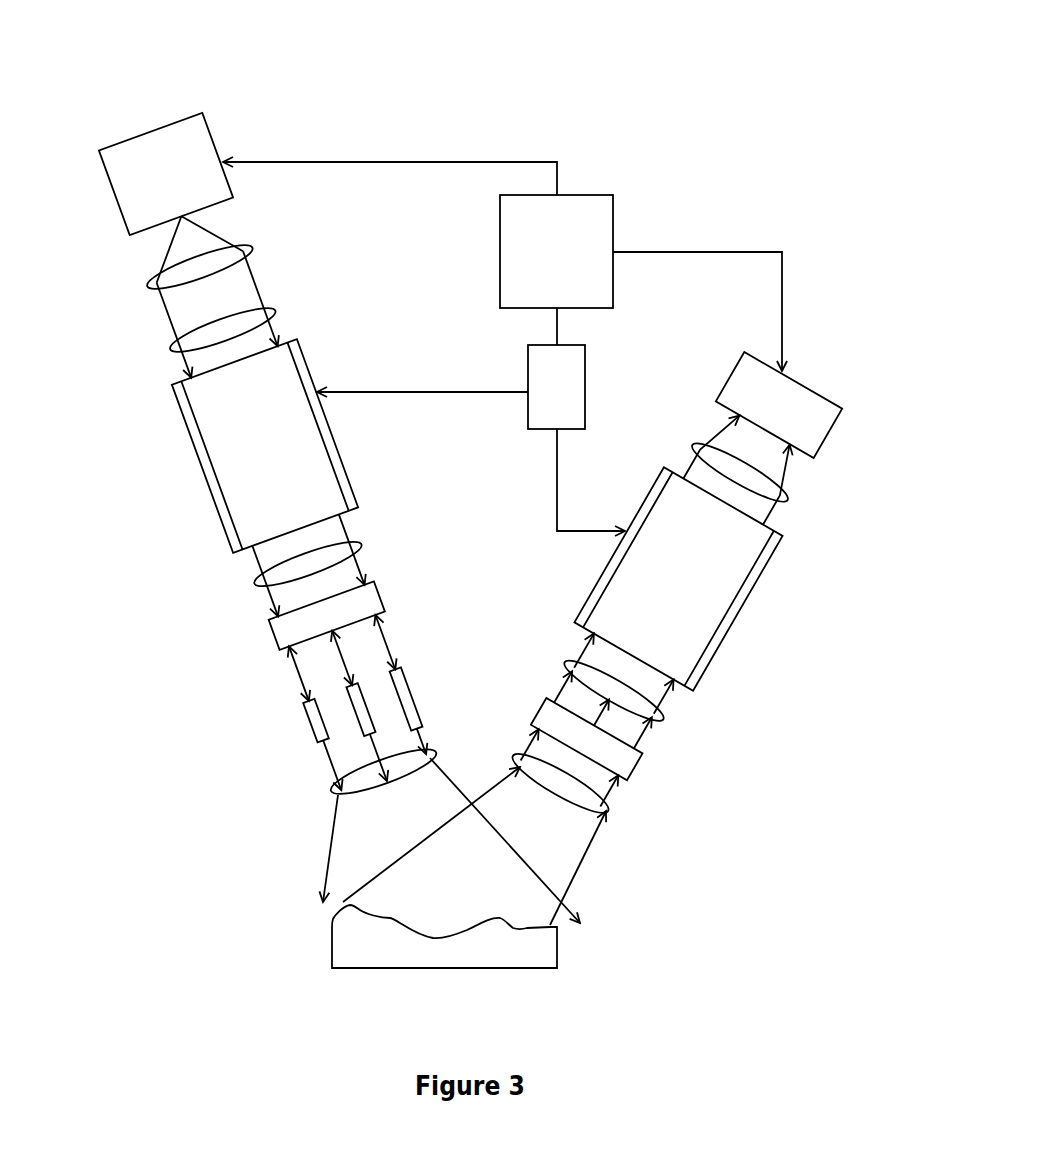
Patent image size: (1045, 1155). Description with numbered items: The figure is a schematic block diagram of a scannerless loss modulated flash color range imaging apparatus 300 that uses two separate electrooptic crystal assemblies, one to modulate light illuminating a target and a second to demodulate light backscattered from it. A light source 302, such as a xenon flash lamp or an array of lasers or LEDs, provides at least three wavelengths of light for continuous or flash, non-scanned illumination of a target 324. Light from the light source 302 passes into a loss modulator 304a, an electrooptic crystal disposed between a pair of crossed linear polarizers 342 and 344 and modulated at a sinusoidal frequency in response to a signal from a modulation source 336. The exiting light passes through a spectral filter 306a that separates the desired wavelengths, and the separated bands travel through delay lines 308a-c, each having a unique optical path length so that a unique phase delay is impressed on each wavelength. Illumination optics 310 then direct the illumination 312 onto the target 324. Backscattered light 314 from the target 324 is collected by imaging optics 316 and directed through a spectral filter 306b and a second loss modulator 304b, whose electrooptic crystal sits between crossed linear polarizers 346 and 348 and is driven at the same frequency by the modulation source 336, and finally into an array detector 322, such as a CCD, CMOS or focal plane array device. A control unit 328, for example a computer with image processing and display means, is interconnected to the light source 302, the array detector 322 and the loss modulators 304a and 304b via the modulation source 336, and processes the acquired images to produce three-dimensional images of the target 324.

The scannerless loss modulated flash color range imaging apparatus 300 is at (538, 47).
The light source 302 is at (166, 174).
The loss modulator 304a is at (265, 446).
The loss modulator 304b is at (678, 579).
The spectral filter 306a is at (262, 637).
The spectral filter 306b is at (643, 779).
The delay lines 308a-c is at (283, 727).
The illumination optics 310 is at (316, 791).
The incident beam 312 is at (314, 857).
The backscattered light 314 is at (592, 870).
The imaging optics 316 is at (619, 822).
The array detector 322 is at (779, 405).
The target 324 is at (350, 944).
The control unit 328 is at (502, 266).
The modulation source 336 is at (471, 438).
The linear polarizer 342 is at (158, 351).
The linear polarizer 344 is at (243, 586).
The linear polarizer 346 is at (674, 720).
The linear polarizer 348 is at (803, 509).